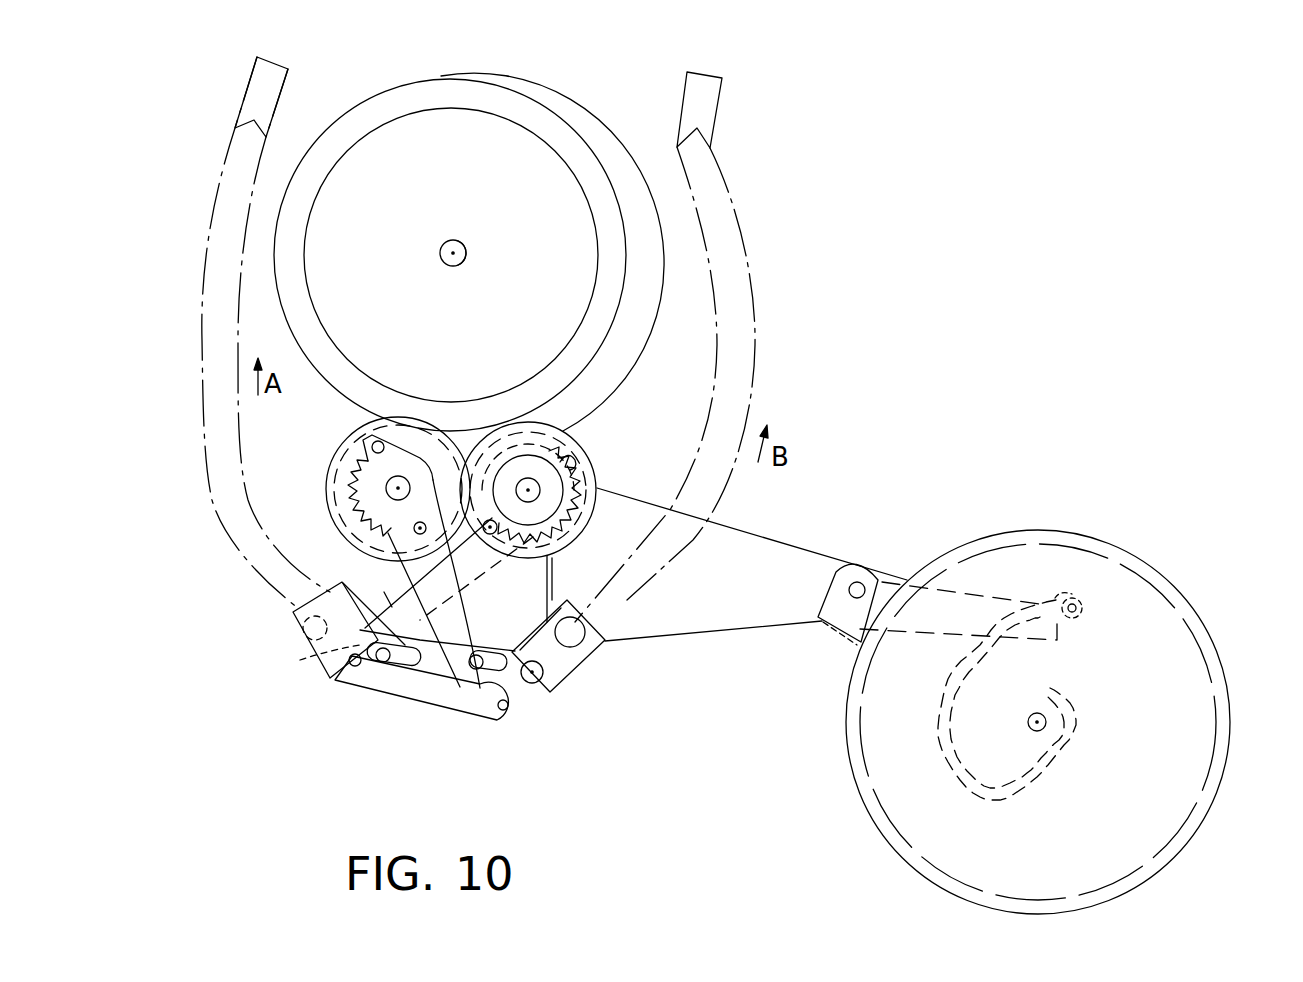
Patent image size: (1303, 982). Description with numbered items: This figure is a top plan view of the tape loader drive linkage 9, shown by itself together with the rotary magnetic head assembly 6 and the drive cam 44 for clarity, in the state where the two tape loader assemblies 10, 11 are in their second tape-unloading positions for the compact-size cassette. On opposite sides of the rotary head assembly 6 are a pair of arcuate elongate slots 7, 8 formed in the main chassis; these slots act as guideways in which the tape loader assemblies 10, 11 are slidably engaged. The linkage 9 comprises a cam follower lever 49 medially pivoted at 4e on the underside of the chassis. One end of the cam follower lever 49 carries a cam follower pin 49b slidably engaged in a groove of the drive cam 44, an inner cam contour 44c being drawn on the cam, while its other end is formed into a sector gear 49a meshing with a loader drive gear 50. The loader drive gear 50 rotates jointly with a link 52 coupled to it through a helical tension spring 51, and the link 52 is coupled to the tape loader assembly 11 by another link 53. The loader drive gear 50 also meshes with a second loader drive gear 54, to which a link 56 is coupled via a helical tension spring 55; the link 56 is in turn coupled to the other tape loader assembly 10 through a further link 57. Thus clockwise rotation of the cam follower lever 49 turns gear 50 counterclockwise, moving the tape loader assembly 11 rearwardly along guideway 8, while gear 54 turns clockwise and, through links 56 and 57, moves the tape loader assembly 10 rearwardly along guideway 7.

The rotary magnetic head assembly 6 is at (600, 131).
The elongate slot 7 is at (205, 422).
The elongate slot 8 is at (750, 361).
The tape loader drive linkage 9 is at (812, 543).
The tape loader assembly 10 is at (335, 645).
The tape loader assembly 11 is at (582, 673).
The drive cam 44 is at (1212, 638).
The cam groove 44c is at (960, 763).
The cam follower lever 49 is at (745, 542).
The sector gear 49a is at (545, 584).
The cam follower pin 49b is at (1078, 602).
The pivot 4e is at (861, 583).
The loader drive gear 50 is at (565, 430).
The helical tension spring 51 is at (582, 486).
The link 52 is at (374, 605).
The link 53 is at (448, 660).
The loader drive gear 54 is at (337, 458).
The helical tension spring 55 is at (355, 498).
The link 56 is at (430, 663).
The link 57 is at (388, 682).